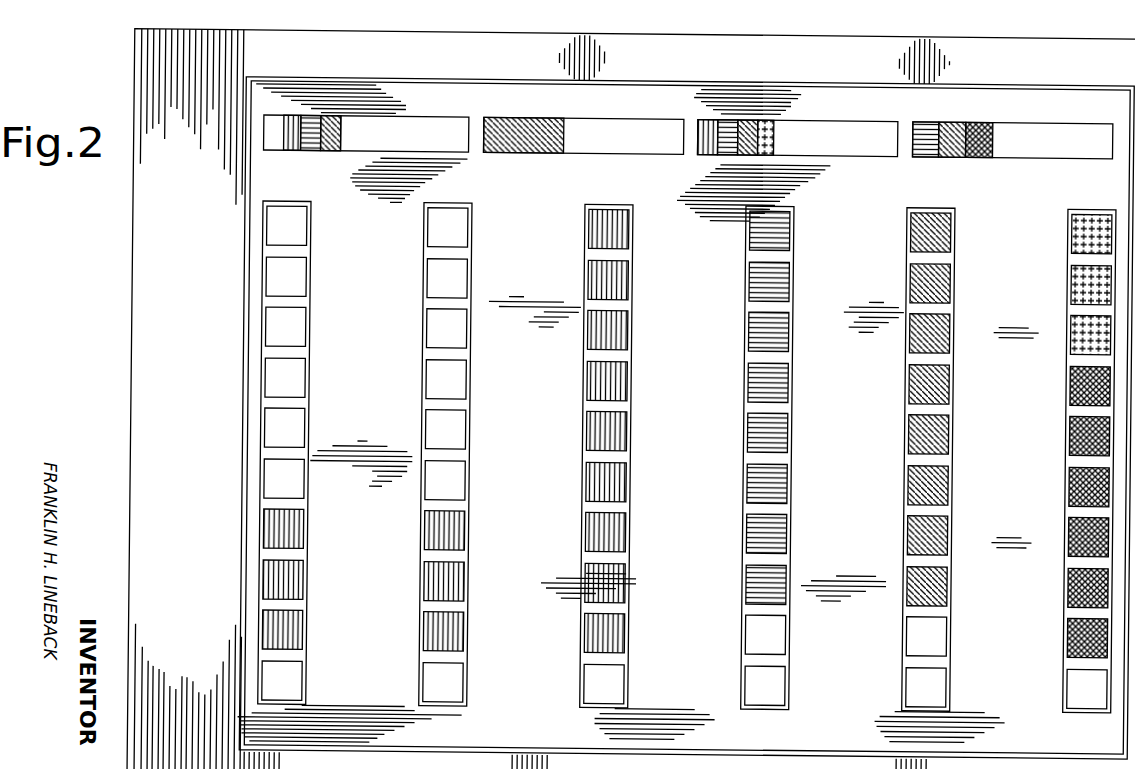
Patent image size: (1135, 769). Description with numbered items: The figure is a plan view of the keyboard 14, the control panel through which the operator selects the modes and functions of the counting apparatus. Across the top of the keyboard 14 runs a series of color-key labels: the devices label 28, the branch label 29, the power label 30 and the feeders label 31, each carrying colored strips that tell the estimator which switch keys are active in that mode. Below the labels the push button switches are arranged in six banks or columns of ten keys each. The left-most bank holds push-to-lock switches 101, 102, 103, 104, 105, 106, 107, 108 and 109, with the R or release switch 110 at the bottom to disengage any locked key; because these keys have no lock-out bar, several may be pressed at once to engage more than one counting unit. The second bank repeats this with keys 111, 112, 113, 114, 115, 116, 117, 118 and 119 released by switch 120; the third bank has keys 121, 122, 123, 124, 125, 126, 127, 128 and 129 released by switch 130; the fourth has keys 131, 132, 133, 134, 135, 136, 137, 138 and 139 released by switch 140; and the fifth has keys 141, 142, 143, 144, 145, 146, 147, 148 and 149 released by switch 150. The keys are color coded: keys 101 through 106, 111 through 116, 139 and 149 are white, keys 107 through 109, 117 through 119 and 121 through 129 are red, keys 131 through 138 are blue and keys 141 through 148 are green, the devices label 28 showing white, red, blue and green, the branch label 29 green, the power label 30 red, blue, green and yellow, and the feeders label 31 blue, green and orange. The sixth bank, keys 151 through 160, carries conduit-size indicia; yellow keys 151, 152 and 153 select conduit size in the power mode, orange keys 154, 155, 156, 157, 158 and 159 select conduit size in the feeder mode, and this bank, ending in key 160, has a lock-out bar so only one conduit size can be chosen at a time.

The keyboard 14 is at (130, 354).
The devices label 28 is at (412, 115).
The branch label 29 is at (617, 114).
The power label 30 is at (804, 115).
The feeders label 31 is at (1022, 115).
The push button switch 101 is at (297, 230).
The push button switch 102 is at (297, 282).
The push button switch 103 is at (297, 332).
The push button switch 104 is at (297, 382).
The push button switch 105 is at (297, 432).
The push button switch 106 is at (297, 484).
The push button switch 107 is at (297, 534).
The push button switch 108 is at (297, 584).
The push button switch 109 is at (297, 634).
The release switch 110 is at (297, 686).
The push button switch 111 is at (458, 230).
The push button switch 112 is at (458, 282).
The push button switch 113 is at (458, 332).
The push button switch 114 is at (458, 382).
The push button switch 115 is at (458, 432).
The push button switch 116 is at (458, 484).
The push button switch 117 is at (458, 534).
The push button switch 118 is at (458, 584).
The push button switch 119 is at (458, 634).
The release switch 120 is at (458, 686).
The push button switch 121 is at (619, 230).
The push button switch 122 is at (619, 282).
The push button switch 123 is at (619, 332).
The push button switch 124 is at (619, 382).
The push button switch 125 is at (619, 432).
The push button switch 126 is at (619, 484).
The push button switch 127 is at (619, 534).
The push button switch 128 is at (619, 584).
The push button switch 129 is at (619, 634).
The release switch 130 is at (619, 686).
The push button switch 131 is at (780, 230).
The push button switch 132 is at (780, 282).
The push button switch 133 is at (780, 332).
The push button switch 134 is at (780, 382).
The push button switch 135 is at (780, 432).
The push button switch 136 is at (780, 484).
The push button switch 137 is at (780, 534).
The push button switch 138 is at (780, 584).
The push button switch 139 is at (780, 634).
The release switch 140 is at (780, 686).
The push button switch 141 is at (941, 230).
The push button switch 142 is at (941, 282).
The push button switch 143 is at (941, 332).
The push button switch 144 is at (941, 382).
The push button switch 145 is at (941, 432).
The push button switch 146 is at (941, 484).
The push button switch 147 is at (941, 534).
The push button switch 148 is at (941, 584).
The push button switch 149 is at (941, 634).
The release switch 150 is at (941, 686).
The switch key 151 is at (1082, 228).
The switch key 152 is at (1082, 280).
The switch key 153 is at (1082, 330).
The switch key 154 is at (1082, 380).
The switch key 155 is at (1082, 430).
The switch key 156 is at (1082, 482).
The switch key 157 is at (1082, 532).
The switch key 158 is at (1082, 582).
The switch key 159 is at (1082, 632).
The release switch 160 is at (1082, 684).